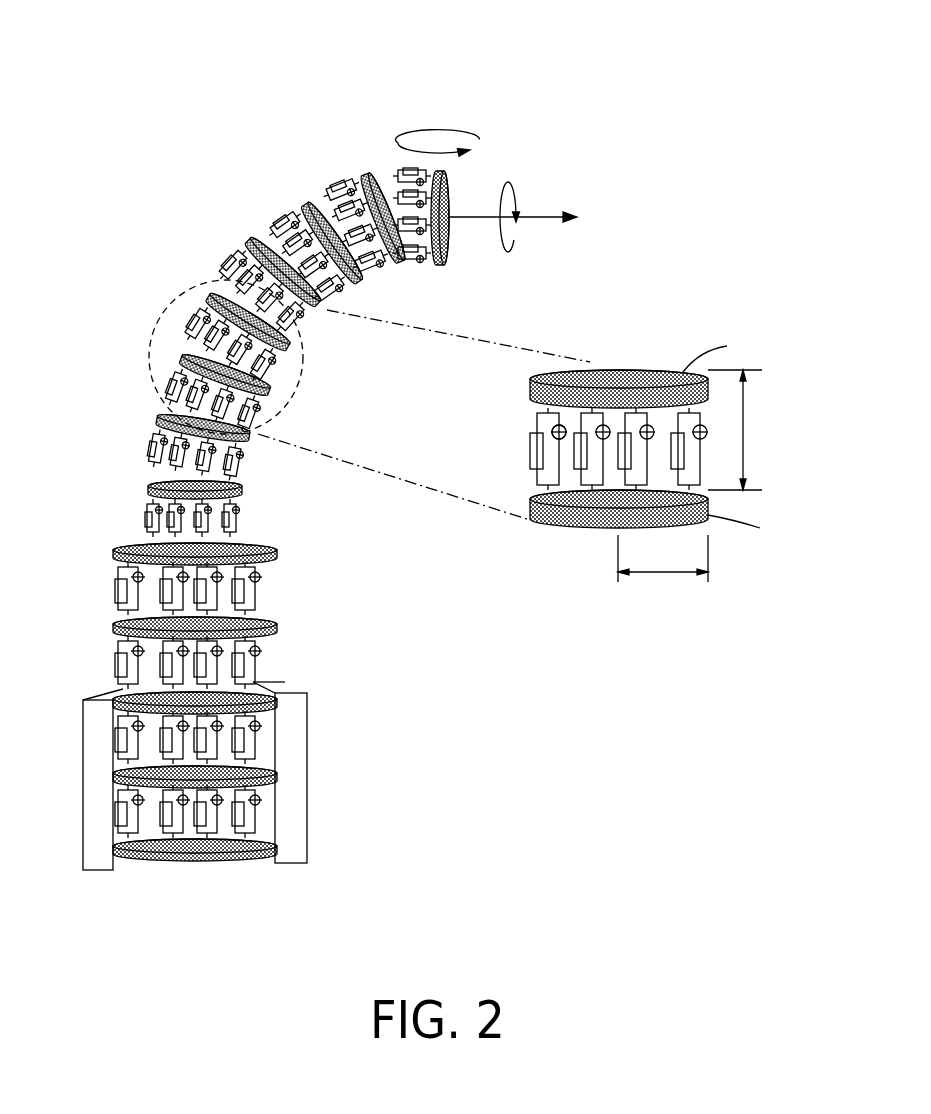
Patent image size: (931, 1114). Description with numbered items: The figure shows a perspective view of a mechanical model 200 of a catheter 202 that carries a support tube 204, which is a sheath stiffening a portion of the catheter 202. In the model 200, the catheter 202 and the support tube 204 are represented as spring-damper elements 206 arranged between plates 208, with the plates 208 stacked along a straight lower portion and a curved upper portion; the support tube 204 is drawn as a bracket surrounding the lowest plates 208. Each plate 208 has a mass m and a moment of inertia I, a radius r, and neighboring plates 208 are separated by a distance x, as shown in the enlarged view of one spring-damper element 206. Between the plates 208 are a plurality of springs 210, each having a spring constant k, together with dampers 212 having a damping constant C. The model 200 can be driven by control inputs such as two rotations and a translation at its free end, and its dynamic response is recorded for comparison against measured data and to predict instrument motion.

The mechanical model 200 is at (298, 101).
The catheter 202 is at (223, 876).
The support tube 204 is at (293, 782).
The spring-damper elements 206 is at (152, 335).
The plates 208 is at (645, 372).
The springs 210 is at (530, 450).
The dampers 212 is at (537, 425).